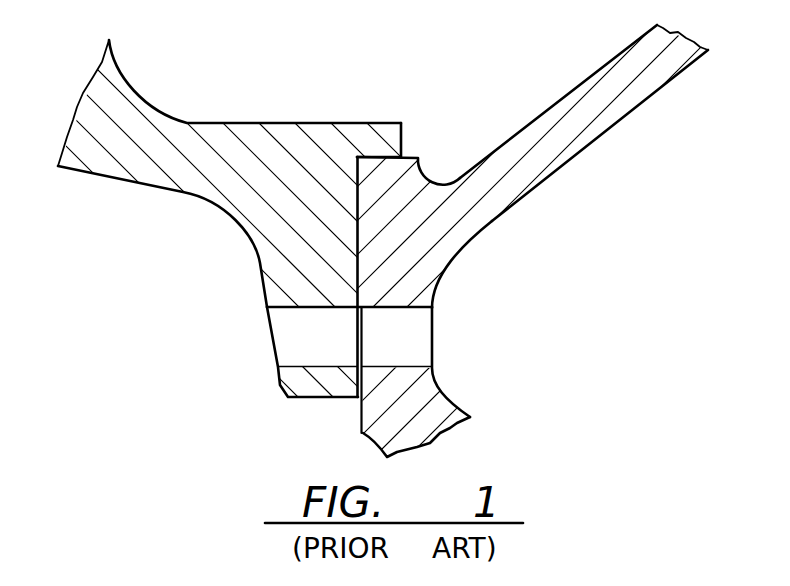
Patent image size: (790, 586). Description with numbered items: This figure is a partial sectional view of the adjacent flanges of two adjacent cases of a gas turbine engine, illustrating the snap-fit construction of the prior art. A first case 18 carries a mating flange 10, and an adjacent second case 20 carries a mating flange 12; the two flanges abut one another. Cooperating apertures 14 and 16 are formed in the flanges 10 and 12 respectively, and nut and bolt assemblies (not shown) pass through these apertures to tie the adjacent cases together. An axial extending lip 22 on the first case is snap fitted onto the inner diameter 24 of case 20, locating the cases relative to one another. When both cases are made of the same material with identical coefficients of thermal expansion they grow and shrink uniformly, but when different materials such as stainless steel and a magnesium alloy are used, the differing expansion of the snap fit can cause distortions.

The mating flange 10 is at (287, 398).
The mating flange 12 is at (463, 410).
The aperture 14 is at (300, 364).
The aperture 16 is at (423, 364).
The case 18 is at (275, 123).
The case 20 is at (617, 120).
The axial extending lip 22 is at (395, 123).
The inner diameter 24 is at (418, 157).